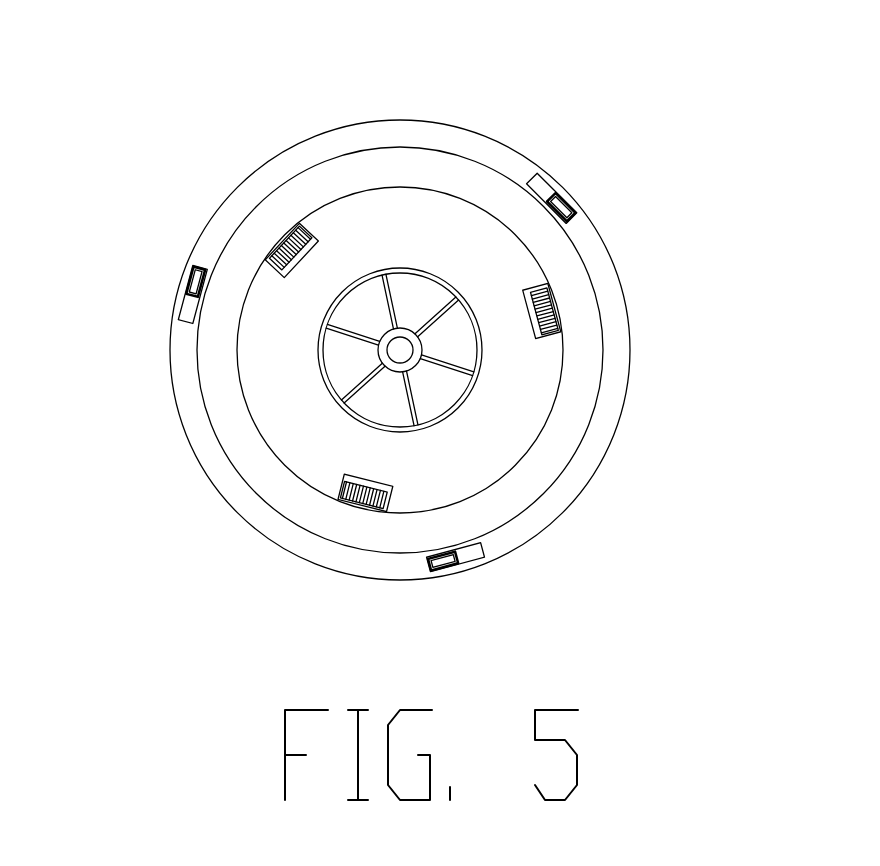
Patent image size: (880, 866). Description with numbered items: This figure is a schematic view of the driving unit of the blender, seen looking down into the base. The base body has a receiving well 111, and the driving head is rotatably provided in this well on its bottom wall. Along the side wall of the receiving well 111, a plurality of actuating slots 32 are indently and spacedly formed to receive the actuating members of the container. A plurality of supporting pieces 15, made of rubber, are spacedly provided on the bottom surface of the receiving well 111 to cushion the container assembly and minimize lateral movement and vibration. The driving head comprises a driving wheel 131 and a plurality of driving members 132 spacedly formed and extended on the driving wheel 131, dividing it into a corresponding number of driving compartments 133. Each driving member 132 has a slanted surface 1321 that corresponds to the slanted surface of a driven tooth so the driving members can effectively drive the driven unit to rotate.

The receiving well 111 is at (432, 230).
The actuating slot 32 is at (578, 186).
The supporting piece 15 is at (295, 246).
The driving wheel 131 is at (348, 367).
The driving member 132 is at (385, 287).
The slanted surface 1321 is at (420, 398).
The driving compartment 133 is at (462, 341).